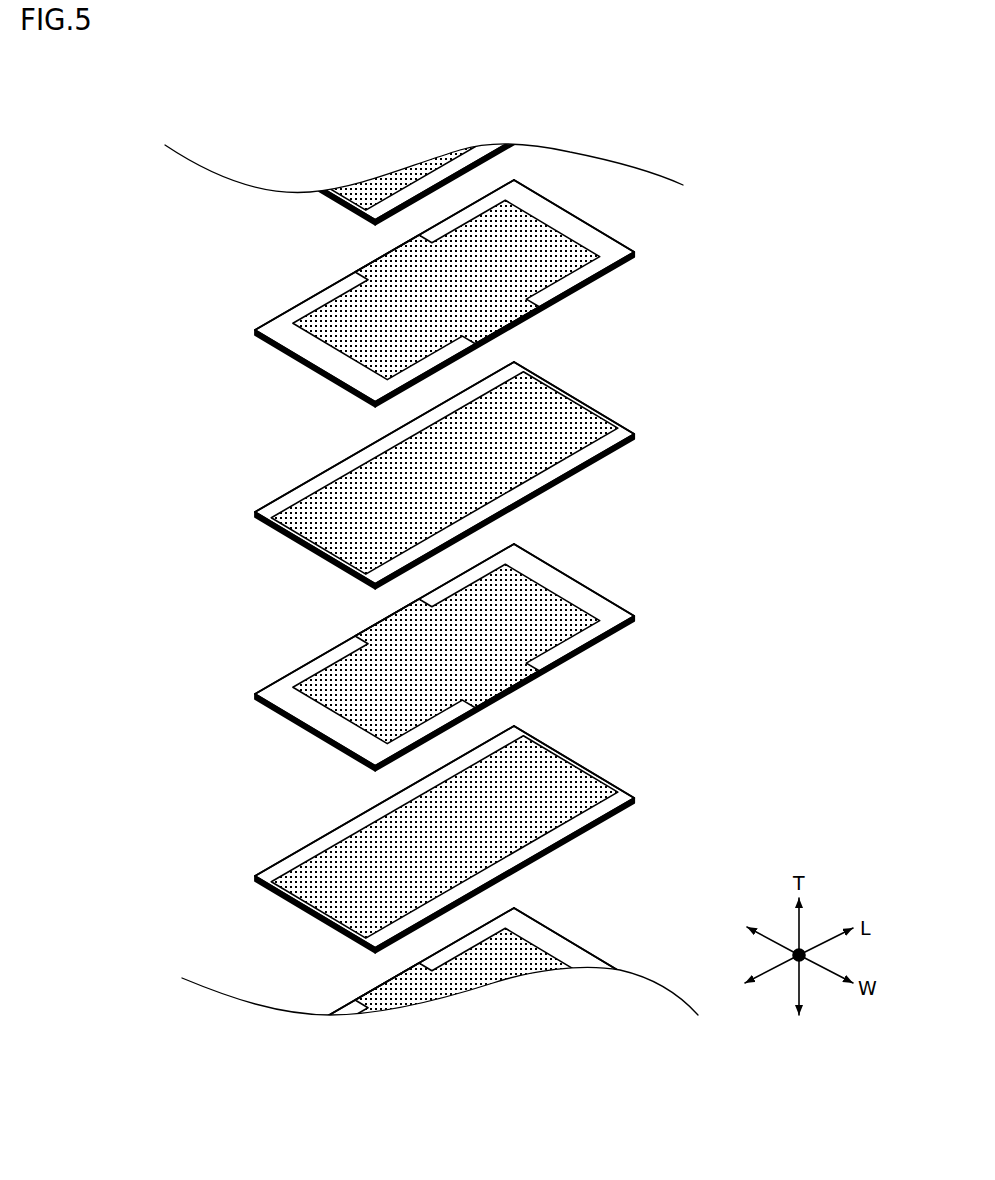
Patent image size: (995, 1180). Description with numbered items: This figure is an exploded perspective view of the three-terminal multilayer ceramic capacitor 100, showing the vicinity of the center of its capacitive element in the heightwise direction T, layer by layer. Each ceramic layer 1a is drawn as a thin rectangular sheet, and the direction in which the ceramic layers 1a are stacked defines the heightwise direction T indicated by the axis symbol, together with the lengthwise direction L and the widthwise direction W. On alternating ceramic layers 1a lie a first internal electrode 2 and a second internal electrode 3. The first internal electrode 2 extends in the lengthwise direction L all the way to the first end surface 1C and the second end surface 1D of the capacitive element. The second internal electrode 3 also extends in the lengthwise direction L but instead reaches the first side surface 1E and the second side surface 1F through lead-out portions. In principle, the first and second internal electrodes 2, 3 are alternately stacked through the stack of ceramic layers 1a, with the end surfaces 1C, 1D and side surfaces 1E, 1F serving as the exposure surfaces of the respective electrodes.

The three-terminal multilayer ceramic capacitor 100 is at (118, 75).
The ceramic layer 1a is at (503, 565).
The first end surface 1C is at (279, 558).
The second end surface 1D is at (615, 490).
The first side surface 1E is at (521, 511).
The second side surface 1F is at (373, 529).
The first internal electrode 2 is at (401, 473).
The second internal electrode 3 is at (407, 653).